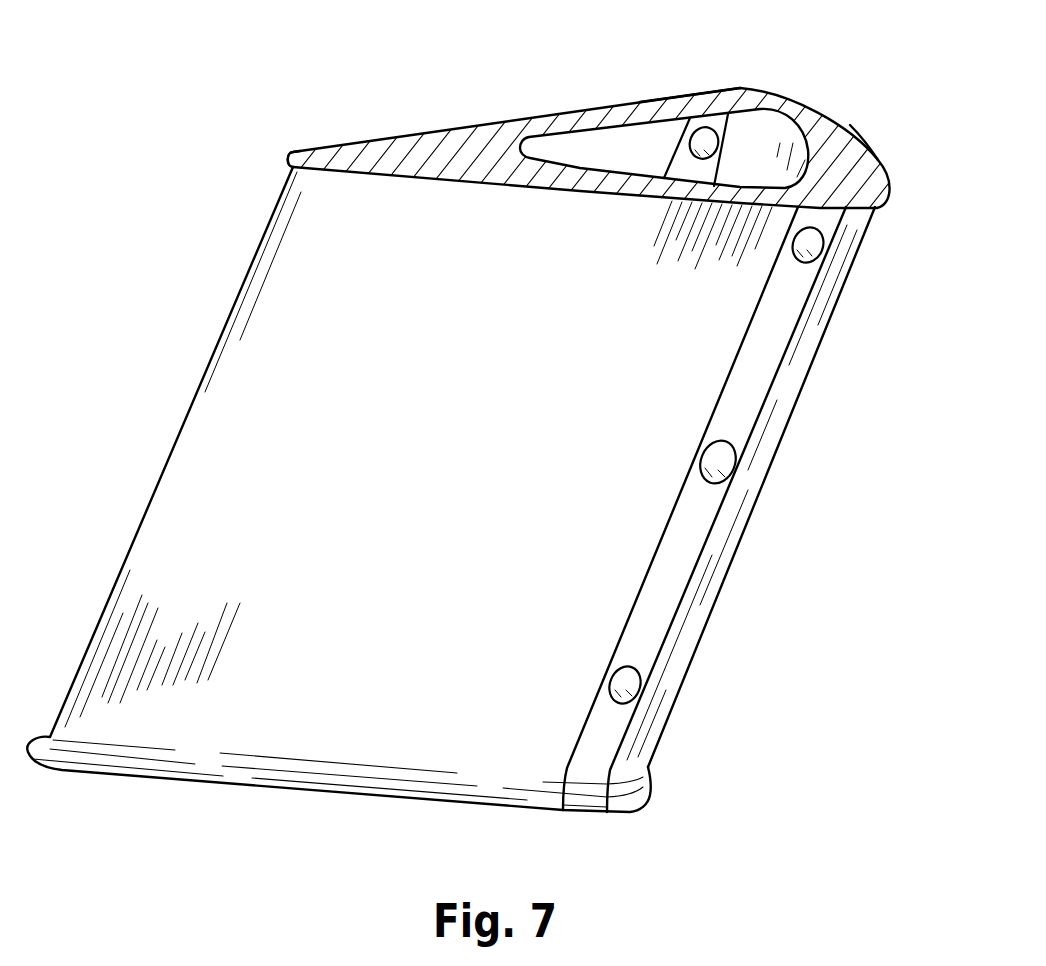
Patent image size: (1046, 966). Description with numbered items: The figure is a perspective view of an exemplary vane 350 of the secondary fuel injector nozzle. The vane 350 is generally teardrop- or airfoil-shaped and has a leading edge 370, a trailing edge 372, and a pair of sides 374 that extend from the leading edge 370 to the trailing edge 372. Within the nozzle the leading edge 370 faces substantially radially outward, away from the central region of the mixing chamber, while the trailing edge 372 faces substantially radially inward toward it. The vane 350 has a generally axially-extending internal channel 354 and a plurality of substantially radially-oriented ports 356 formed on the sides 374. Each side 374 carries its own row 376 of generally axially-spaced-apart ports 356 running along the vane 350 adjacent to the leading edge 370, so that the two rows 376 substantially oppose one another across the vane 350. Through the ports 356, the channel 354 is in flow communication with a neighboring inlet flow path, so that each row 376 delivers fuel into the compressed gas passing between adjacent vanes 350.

The vane 350 is at (352, 90).
The internal channel 354 is at (788, 122).
The ports 356 is at (805, 263).
The leading edge 370 is at (867, 147).
The trailing edge 372 is at (292, 161).
The sides 374 is at (497, 177).
The row of ports 376 is at (737, 90).